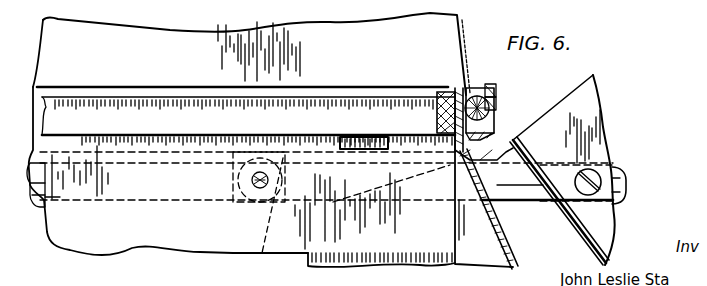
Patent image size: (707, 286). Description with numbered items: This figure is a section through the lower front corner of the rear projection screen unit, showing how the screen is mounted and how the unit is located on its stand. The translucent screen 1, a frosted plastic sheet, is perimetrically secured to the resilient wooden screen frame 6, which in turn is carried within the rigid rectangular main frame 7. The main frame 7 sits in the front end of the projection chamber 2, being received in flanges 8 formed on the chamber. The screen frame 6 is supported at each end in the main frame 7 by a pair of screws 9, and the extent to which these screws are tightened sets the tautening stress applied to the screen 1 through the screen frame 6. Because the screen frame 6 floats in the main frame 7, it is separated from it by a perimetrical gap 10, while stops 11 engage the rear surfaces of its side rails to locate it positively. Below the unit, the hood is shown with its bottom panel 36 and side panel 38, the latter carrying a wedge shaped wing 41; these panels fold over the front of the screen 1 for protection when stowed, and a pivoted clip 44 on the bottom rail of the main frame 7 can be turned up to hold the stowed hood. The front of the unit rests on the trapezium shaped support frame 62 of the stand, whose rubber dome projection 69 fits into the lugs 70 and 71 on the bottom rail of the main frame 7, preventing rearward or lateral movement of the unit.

The translucent screen 1 is at (292, 97).
The projection chamber 2 is at (465, 43).
The screen frame 6 is at (433, 107).
The main frame 7 is at (491, 127).
The flanges 8 is at (491, 89).
The screws 9 is at (470, 98).
The perimetrical gap 10 is at (457, 147).
The stops 11 is at (453, 87).
The bottom panel 36 is at (241, 243).
The side panel 38 is at (482, 254).
The wing 41 is at (514, 265).
The pivoted clips 44 is at (488, 203).
The support frame 62 is at (45, 210).
The upstanding projection 69 is at (233, 200).
The lug 70 is at (567, 108).
The lug 71 is at (267, 216).